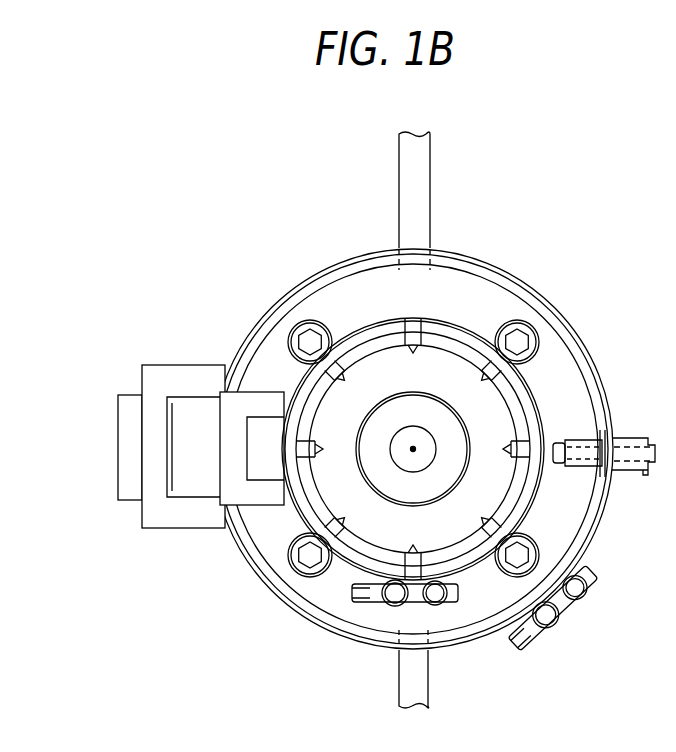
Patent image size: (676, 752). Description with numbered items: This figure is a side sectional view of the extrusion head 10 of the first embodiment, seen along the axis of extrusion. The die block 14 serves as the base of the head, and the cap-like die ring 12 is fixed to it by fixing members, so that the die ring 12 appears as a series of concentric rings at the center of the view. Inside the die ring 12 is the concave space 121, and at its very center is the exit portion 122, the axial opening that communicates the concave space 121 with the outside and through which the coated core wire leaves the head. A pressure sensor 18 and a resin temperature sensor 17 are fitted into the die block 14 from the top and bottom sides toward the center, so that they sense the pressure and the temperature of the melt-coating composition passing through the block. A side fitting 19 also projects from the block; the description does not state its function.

The extrusion head 10 is at (594, 194).
The die ring 12 is at (414, 452).
The die block 14 is at (272, 535).
The resin temperature sensor 17 is at (401, 687).
The pressure sensor 18 is at (403, 186).
The side fitting 19 is at (628, 435).
The concave space 121 is at (368, 512).
The exit portion 122 is at (418, 449).